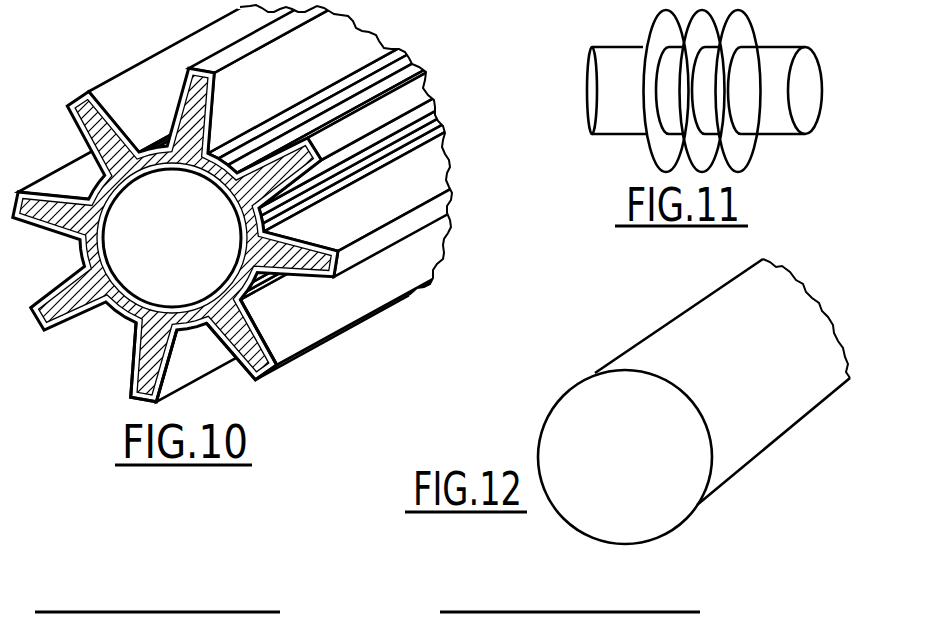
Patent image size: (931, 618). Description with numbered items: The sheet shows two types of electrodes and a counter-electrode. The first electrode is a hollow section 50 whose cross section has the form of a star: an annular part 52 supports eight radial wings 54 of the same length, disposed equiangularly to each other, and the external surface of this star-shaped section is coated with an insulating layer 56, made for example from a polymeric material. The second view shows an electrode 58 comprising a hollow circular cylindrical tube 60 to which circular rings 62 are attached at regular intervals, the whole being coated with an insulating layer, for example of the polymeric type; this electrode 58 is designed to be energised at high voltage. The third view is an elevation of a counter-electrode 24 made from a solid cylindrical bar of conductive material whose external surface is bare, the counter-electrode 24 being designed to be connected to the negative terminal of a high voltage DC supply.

In FIG. 10, the toothed shaft 50 is at (388, 210).
In FIG. 10, the annular part 52 is at (96, 251).
In FIG. 10, the radial wings 54 is at (248, 376).
In FIG. 10, the insulating layer 56 is at (170, 357).
In FIG. 11, the electrode 58 is at (603, 137).
In FIG. 11, the hollow circular cylindrical tube 60 is at (813, 114).
In FIG. 11, the circular rings 62 is at (749, 34).
In FIG. 12, the counter-electrode 24 is at (622, 517).